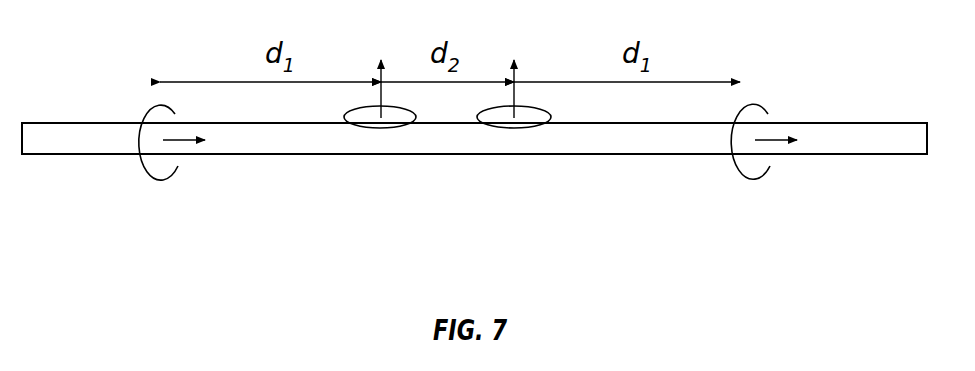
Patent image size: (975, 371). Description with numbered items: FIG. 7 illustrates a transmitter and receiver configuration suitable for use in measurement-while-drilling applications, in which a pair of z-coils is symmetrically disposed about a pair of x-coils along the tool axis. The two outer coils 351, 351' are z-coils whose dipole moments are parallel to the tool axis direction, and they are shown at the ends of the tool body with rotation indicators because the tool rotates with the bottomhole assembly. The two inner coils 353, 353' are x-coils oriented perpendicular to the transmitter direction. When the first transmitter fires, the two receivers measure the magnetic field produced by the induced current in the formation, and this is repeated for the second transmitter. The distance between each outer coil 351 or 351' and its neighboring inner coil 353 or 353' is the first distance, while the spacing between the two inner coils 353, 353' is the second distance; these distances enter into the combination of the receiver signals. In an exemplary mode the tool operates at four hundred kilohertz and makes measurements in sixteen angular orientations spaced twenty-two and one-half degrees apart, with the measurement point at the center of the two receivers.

The z-coil 351 is at (171, 164).
The z-coil 351' is at (764, 163).
The x-coil 353 is at (380, 142).
The x-coil 353' is at (514, 142).